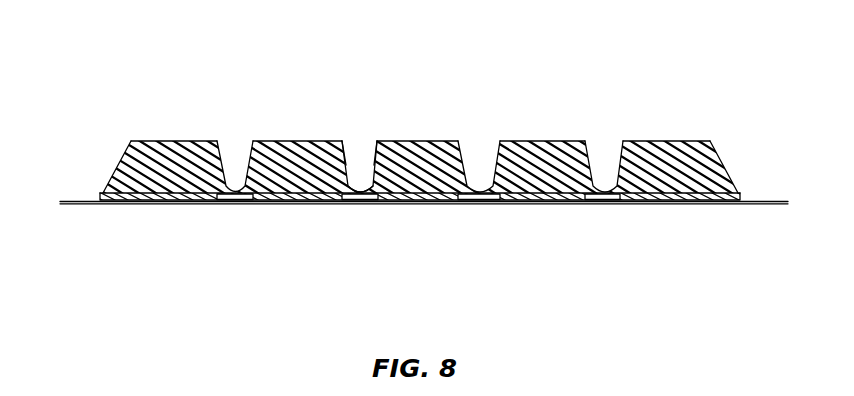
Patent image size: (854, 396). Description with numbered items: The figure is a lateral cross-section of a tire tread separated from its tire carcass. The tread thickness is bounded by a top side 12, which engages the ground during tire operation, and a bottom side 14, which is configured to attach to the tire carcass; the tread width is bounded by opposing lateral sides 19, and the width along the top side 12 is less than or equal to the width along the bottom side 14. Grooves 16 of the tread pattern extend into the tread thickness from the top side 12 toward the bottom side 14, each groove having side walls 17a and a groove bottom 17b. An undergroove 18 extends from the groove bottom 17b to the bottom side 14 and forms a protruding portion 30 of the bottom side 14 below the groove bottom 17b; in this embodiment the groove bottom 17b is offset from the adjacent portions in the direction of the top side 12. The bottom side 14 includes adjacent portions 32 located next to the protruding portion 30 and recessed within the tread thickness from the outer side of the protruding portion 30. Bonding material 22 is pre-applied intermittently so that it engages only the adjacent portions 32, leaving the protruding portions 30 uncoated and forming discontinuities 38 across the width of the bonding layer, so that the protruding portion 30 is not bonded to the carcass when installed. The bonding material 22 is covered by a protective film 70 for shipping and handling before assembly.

The top side 12 is at (660, 141).
The bottom side 14 is at (532, 204).
The groove 16 is at (233, 150).
The groove side wall 17a is at (348, 145).
The groove bottom 17b is at (362, 186).
The undergroove 18 is at (606, 188).
The lateral side 19 is at (126, 150).
The bonding material 22 is at (740, 198).
The protruding portion 30 is at (350, 205).
The adjacent portion 32 is at (163, 197).
The discontinuity 38 is at (238, 208).
The protective film 70 is at (75, 201).